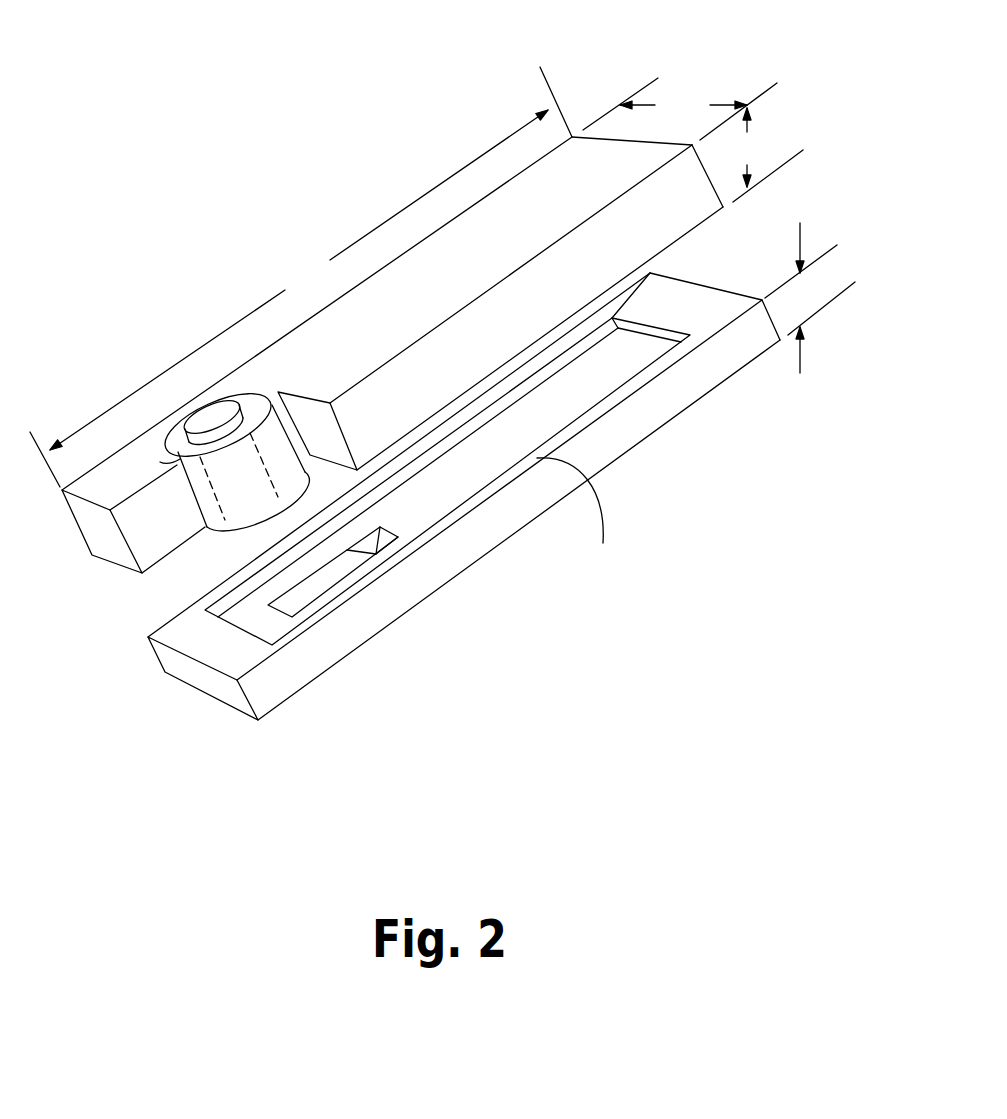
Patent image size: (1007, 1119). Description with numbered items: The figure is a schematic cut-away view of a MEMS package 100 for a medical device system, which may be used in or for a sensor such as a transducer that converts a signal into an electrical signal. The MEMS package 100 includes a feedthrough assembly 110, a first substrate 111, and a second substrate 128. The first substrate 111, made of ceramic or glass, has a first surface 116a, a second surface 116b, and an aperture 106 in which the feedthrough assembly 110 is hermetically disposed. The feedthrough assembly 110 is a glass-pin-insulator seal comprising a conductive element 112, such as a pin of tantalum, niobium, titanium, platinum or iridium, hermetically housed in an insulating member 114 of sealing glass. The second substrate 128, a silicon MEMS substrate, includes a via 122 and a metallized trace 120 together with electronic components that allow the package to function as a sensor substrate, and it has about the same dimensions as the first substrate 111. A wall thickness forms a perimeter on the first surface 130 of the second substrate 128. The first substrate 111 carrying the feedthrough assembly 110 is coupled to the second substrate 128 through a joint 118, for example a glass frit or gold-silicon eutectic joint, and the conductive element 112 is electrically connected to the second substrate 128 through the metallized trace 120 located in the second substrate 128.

The MEMS package 100 is at (442, 385).
The aperture 106 is at (227, 431).
The feedthrough assembly 110 is at (173, 443).
The first substrate 111 is at (456, 311).
The conductive element 112 is at (220, 405).
The insulating member 114 is at (215, 527).
The first surface 116a is at (580, 173).
The second surface 116b is at (727, 223).
The joint 118 is at (185, 643).
The metallized trace 120 is at (307, 597).
The via 122 is at (393, 528).
The second substrate 128 is at (464, 496).
The first surface 130 is at (683, 298).